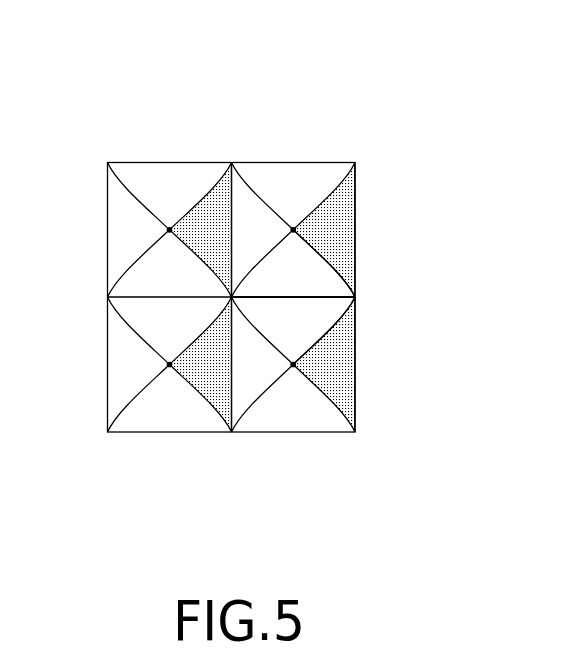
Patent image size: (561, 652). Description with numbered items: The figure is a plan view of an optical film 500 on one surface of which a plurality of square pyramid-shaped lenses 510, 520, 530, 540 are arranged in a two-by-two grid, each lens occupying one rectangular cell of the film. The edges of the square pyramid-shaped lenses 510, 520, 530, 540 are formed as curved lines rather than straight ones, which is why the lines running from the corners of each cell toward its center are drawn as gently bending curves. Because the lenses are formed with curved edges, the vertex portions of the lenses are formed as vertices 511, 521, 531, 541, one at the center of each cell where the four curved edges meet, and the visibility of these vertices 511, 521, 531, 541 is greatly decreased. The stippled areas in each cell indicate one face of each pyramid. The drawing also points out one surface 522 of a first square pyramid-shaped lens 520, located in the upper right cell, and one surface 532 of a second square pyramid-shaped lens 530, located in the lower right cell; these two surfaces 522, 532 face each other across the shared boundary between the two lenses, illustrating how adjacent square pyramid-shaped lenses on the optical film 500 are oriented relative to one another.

The optical film 500 is at (252, 40).
The square pyramid-shaped lens 510 is at (167, 182).
The vertex 511 is at (170, 230).
The first square pyramid-shaped lens 520 is at (295, 180).
The vertex 521 is at (293, 230).
The one surface of first square pyramid-shaped lens 522 is at (298, 272).
The second square pyramid-shaped lens 530 is at (295, 413).
The vertex 531 is at (293, 364).
The one surface of second square pyramid-shaped lens 532 is at (298, 317).
The square pyramid-shaped lens 540 is at (167, 413).
The vertex 541 is at (170, 364).